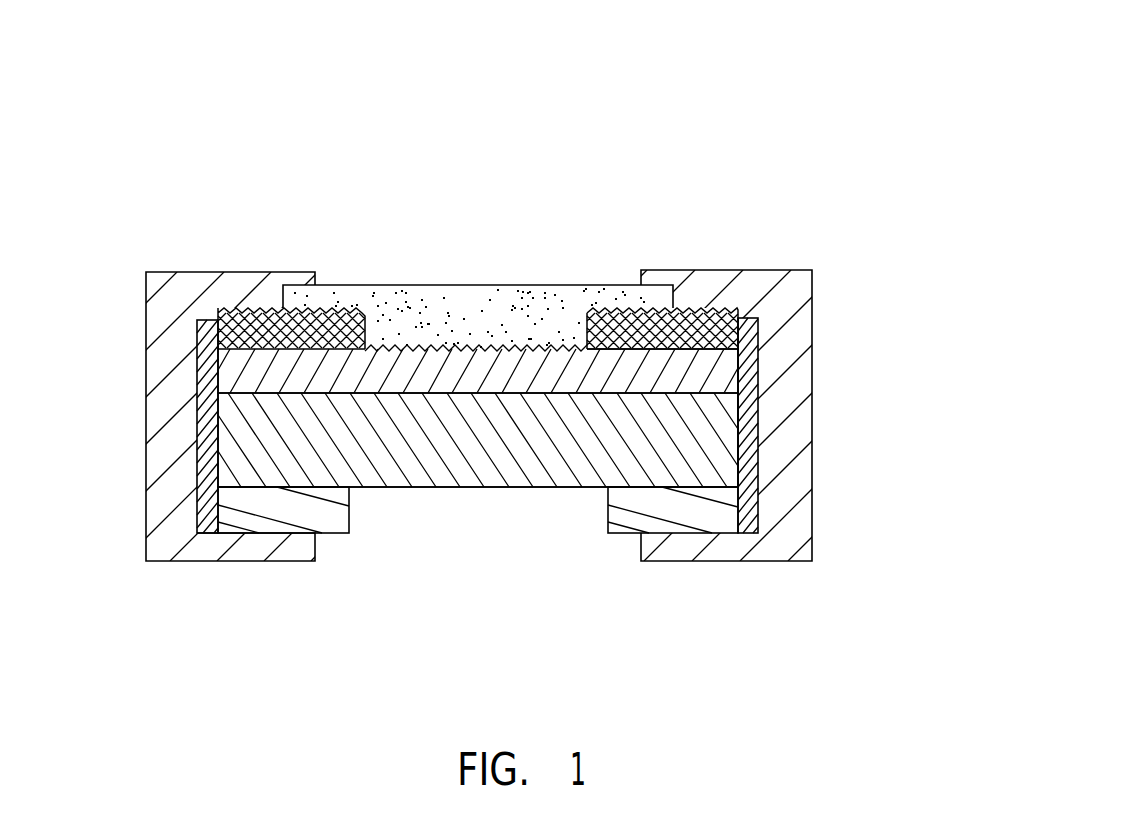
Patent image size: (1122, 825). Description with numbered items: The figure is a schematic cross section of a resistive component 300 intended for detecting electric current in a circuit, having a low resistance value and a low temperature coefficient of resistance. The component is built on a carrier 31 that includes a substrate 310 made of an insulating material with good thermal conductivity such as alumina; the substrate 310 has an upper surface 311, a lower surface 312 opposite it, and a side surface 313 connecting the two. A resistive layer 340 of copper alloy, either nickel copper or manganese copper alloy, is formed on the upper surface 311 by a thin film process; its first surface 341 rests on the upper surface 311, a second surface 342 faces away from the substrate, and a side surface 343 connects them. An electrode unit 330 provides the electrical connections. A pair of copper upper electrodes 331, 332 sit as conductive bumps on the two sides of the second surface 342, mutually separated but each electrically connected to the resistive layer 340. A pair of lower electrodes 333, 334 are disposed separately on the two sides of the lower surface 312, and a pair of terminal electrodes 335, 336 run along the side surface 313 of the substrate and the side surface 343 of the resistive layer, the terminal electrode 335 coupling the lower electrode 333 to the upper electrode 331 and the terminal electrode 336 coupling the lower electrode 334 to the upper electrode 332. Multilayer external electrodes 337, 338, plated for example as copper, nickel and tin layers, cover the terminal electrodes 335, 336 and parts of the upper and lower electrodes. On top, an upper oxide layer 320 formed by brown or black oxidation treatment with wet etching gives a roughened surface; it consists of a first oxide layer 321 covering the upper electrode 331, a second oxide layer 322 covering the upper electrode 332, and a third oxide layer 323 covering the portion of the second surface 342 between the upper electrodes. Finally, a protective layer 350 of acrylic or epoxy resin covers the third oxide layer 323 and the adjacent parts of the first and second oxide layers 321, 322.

The resistive component 300 is at (824, 28).
The substrate 310 is at (478, 475).
The carrier 31 is at (477, 445).
The upper surface 311 is at (583, 377).
The first surface 341 is at (740, 390).
The lower surface 312 is at (720, 486).
The side surface 313 is at (740, 430).
The upper oxide layer 320 is at (598, 168).
The first oxide layer 321 is at (305, 295).
The second oxide layer 322 is at (640, 305).
The third oxide layer 323 is at (390, 347).
The electrode unit 330 is at (132, 550).
The upper electrode 331 is at (259, 325).
The upper electrode 332 is at (699, 323).
The lower electrode 333 is at (302, 505).
The lower electrode 334 is at (663, 508).
The terminal electrode 335 is at (208, 510).
The terminal electrode 336 is at (752, 505).
The external electrode 337 is at (185, 295).
The external electrode 338 is at (777, 282).
The resistive layer 340 is at (230, 372).
The second surface 342 is at (738, 344).
The side surface 343 is at (755, 363).
The protective layer 350 is at (538, 304).